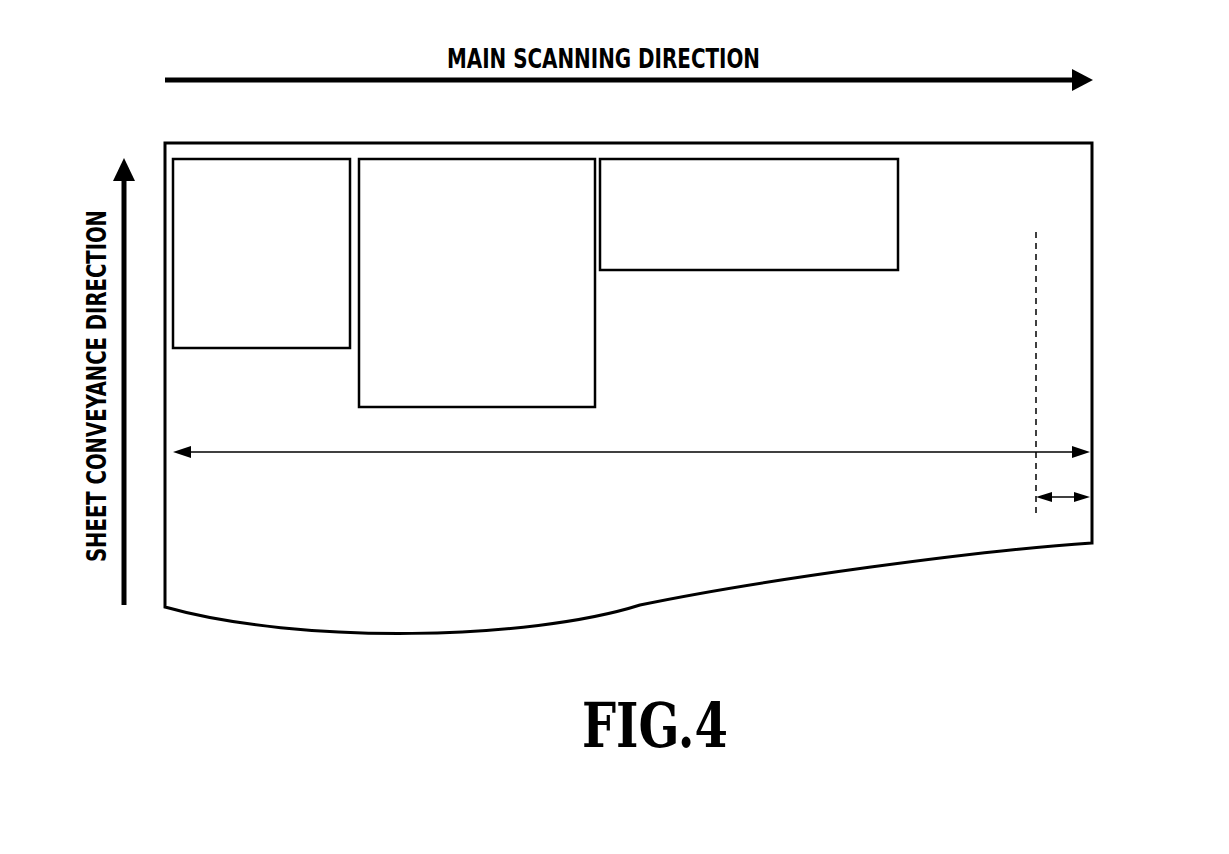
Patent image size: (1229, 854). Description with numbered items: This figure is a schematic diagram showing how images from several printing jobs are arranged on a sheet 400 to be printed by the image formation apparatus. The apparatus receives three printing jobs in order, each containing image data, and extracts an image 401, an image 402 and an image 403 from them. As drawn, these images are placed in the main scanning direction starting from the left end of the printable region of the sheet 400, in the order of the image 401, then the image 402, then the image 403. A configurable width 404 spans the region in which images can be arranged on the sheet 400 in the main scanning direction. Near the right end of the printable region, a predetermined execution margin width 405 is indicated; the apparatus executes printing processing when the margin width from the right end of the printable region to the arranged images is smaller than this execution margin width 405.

The sheet 400 is at (1093, 158).
The image 401 is at (258, 158).
The image 402 is at (474, 158).
The image 403 is at (748, 158).
The configurable width 404 is at (1076, 452).
The execution margin width 405 is at (1076, 497).